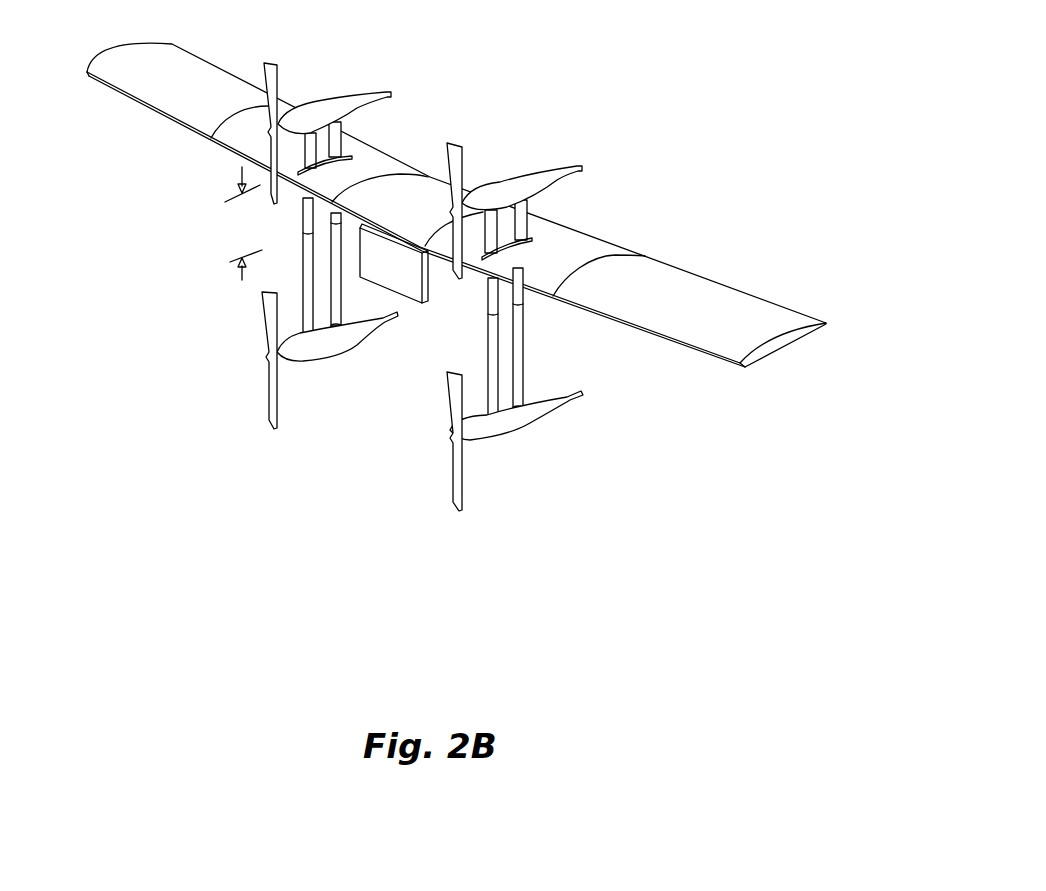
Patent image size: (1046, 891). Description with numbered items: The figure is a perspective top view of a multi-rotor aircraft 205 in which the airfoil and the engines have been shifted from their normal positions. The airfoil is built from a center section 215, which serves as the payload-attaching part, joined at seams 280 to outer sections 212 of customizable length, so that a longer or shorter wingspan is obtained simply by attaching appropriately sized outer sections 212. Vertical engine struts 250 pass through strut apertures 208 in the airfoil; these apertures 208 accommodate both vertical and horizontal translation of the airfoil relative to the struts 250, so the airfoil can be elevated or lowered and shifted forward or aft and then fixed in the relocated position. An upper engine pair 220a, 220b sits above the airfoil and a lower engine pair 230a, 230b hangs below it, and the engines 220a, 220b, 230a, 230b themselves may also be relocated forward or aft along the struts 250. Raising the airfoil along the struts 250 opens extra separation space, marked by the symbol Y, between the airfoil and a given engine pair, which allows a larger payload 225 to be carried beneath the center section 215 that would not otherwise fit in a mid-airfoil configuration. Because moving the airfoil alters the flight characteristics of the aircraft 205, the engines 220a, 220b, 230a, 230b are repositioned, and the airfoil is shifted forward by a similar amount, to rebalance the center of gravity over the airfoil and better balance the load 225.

The multi-rotor aircraft 205 is at (456, 266).
The outer section of airfoil 212 is at (142, 88).
The seam 280 is at (257, 108).
The center section of airfoil 215 is at (405, 176).
The engine 220a is at (540, 178).
The engine 220b is at (348, 97).
The strut aperture 208 is at (347, 158).
The payload 225 is at (440, 282).
The engine strut 250 is at (565, 360).
The engine 230a is at (520, 428).
The engine 230b is at (335, 342).